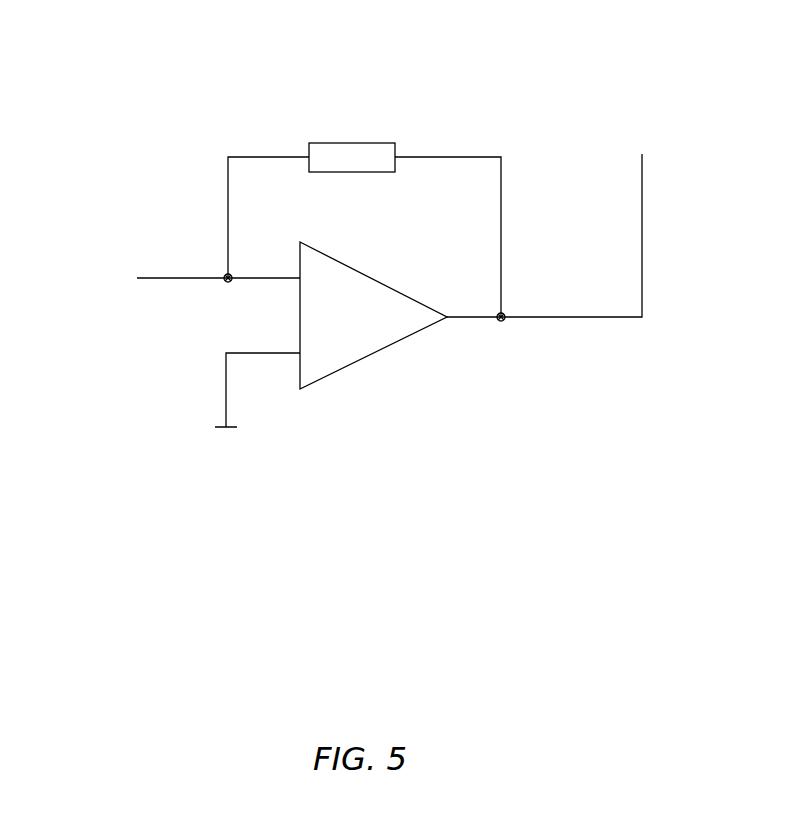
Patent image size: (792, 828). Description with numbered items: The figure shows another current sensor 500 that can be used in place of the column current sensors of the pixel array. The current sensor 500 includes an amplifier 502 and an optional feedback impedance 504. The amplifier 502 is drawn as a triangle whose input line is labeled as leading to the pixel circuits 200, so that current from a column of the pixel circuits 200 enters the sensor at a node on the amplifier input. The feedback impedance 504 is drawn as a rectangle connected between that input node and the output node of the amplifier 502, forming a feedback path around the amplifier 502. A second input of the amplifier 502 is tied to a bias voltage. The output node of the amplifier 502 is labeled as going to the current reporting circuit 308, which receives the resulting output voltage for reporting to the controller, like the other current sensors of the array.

The current sensor 500 is at (413, 315).
The pixel circuits 200 is at (170, 278).
The feedback impedance 504 is at (358, 143).
The amplifier 502 is at (368, 357).
The current reporting circuit 308 is at (580, 199).